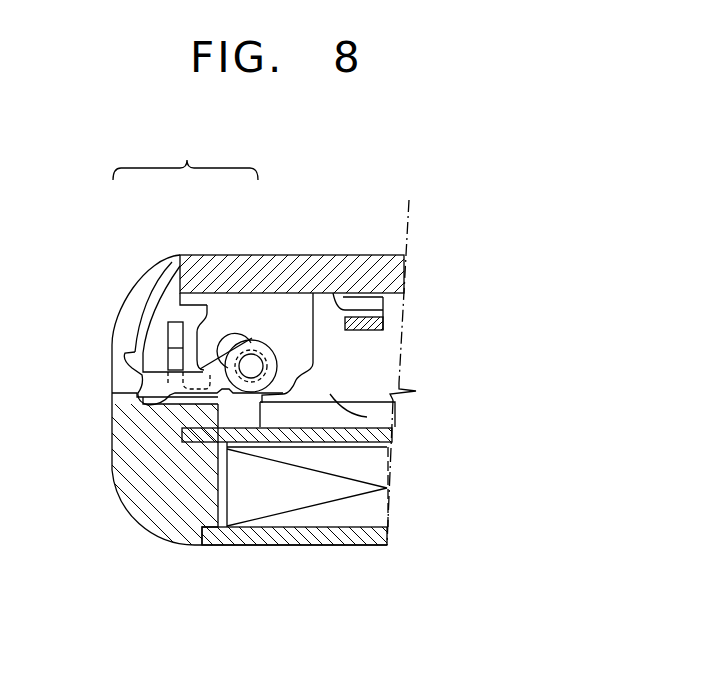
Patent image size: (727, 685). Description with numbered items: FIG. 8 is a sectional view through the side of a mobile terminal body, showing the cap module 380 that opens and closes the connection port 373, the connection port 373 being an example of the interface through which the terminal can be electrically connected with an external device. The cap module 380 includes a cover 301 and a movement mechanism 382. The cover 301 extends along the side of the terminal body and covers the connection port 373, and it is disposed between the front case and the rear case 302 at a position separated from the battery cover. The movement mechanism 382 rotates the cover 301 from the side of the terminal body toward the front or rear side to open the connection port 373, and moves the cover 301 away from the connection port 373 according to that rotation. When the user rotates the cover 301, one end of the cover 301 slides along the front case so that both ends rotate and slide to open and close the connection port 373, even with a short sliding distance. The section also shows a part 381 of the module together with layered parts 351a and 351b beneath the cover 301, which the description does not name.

The cover 301 is at (158, 505).
The rear case 302 is at (300, 272).
The cap module 380 is at (185, 160).
The latch lever 381 is at (140, 310).
The movement mechanism 382 is at (243, 322).
The connection port 373 is at (367, 417).
The lower support plate 351a is at (293, 535).
The guide wedge 351b is at (340, 513).